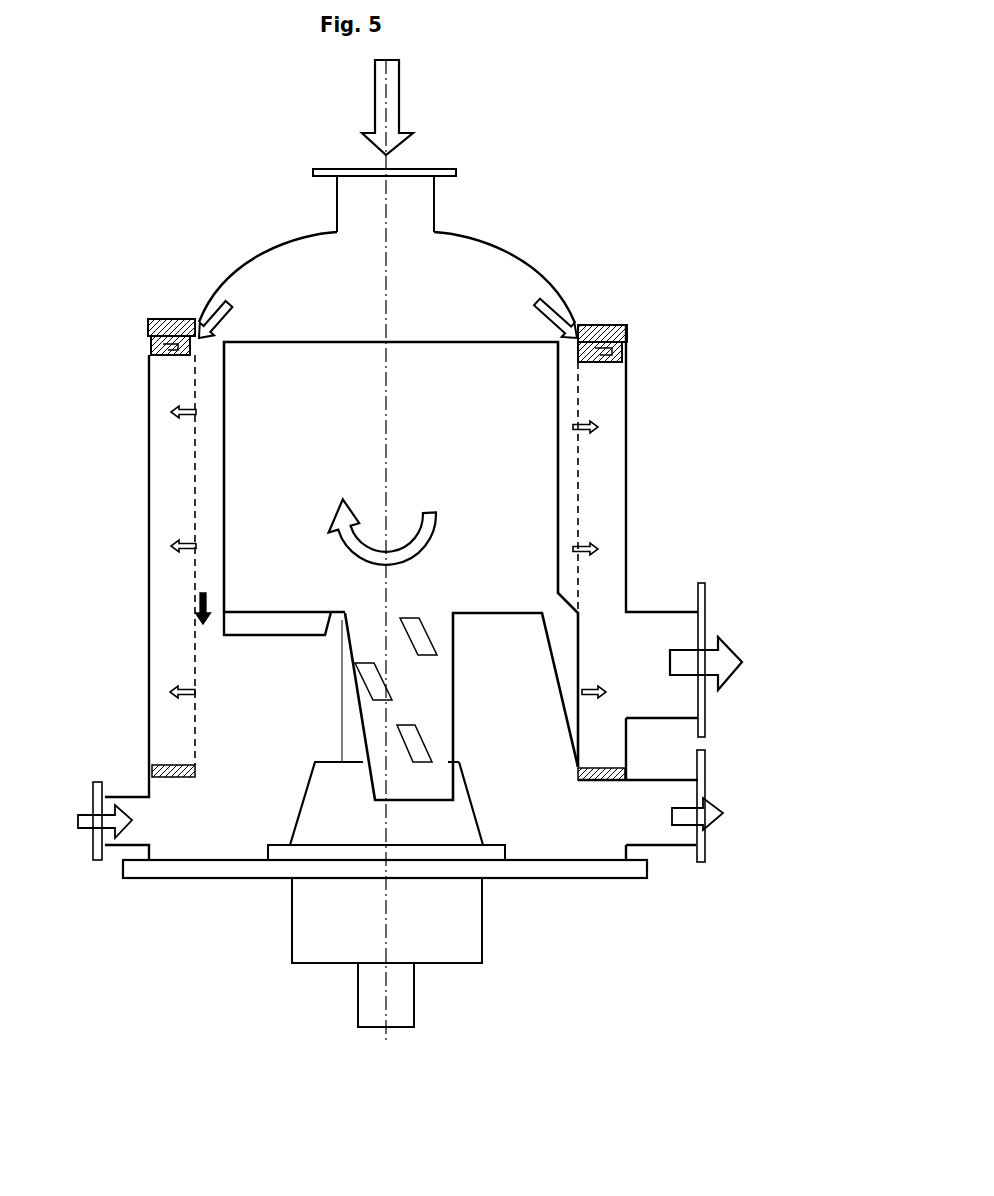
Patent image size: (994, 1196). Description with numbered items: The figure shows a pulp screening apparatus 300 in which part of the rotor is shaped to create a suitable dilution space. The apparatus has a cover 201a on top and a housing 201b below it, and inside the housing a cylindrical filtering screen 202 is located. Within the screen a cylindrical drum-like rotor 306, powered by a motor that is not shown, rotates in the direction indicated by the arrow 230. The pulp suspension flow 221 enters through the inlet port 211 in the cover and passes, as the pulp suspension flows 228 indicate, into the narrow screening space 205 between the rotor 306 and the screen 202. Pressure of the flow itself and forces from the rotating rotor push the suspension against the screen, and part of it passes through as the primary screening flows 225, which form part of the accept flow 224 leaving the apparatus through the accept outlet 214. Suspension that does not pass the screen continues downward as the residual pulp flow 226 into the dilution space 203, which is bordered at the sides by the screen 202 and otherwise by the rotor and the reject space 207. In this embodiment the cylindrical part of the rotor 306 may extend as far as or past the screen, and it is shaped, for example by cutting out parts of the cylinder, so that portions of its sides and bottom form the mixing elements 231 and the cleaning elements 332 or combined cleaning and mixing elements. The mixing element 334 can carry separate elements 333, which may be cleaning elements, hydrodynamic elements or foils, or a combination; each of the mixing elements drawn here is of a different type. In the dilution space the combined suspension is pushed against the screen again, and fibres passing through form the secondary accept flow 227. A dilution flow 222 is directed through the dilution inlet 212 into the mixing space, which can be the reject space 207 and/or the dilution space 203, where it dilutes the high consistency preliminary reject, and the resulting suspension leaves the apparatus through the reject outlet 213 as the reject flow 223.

The apparatus 300 is at (597, 126).
The pulp suspension flow 221 is at (405, 107).
The inlet port 211 is at (436, 177).
The cover 201a is at (222, 262).
The housing 201b is at (148, 478).
The pulp suspension flows 228 is at (388, 310).
The cylindrical filtering screen 202 is at (193, 585).
The screening space 205 is at (203, 505).
The rotor 306 is at (342, 418).
The primary screening flows 225 is at (196, 412).
The arrow indicating rotor rotation 230 is at (400, 548).
The residual pulp flow 226 is at (208, 602).
The mixing elements 231 is at (284, 625).
The dilution space 203 is at (427, 706).
The mixing element 334 is at (354, 713).
The cleaning elements 332 is at (558, 710).
The separate elements 333 is at (420, 650).
The reject space 207 is at (385, 894).
The reject outlet 213 is at (670, 848).
The dilution inlet 212 is at (124, 796).
The accept outlet 214 is at (665, 612).
The dilution flow 222 is at (85, 820).
The accept flow 224 is at (728, 664).
The reject flow 223 is at (706, 825).
The secondary accept flow 227 is at (170, 690).